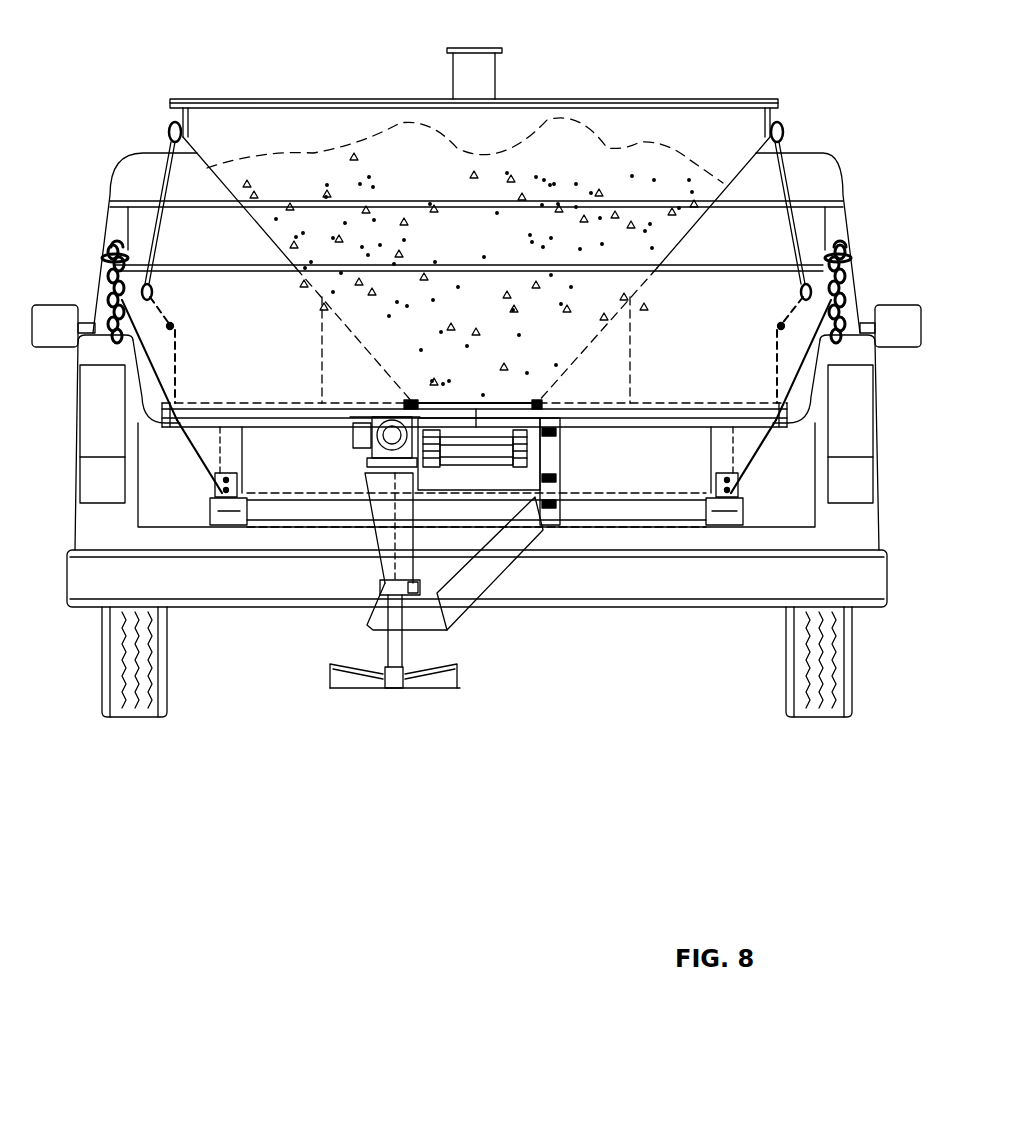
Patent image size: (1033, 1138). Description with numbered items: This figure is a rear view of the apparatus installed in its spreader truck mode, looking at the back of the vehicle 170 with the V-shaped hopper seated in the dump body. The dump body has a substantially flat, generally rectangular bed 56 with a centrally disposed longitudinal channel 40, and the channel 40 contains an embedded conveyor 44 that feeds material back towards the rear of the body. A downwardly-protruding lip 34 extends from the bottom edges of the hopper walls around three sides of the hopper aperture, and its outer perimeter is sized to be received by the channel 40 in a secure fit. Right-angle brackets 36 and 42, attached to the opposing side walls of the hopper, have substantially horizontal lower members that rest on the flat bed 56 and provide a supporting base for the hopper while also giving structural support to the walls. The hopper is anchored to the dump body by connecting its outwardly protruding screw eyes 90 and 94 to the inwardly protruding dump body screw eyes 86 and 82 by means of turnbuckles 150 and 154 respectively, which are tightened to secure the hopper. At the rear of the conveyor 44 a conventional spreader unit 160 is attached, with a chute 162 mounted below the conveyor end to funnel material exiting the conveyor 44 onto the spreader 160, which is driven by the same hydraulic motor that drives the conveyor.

The lip 34 is at (413, 402).
The right-angle bracket 36 is at (645, 322).
The longitudinal channel 40 is at (483, 372).
The right-angle bracket 42 is at (307, 333).
The conveyor 44 is at (522, 452).
The bed 56 is at (193, 403).
The screw eye 82 is at (152, 287).
The screw eye 86 is at (803, 287).
The screw eye 90 is at (777, 127).
The screw eye 94 is at (173, 127).
The turnbuckle 150 is at (787, 187).
The turnbuckle 154 is at (158, 192).
The spreader unit 160 is at (448, 705).
The chute 162 is at (487, 587).
The truck 170 is at (263, 622).